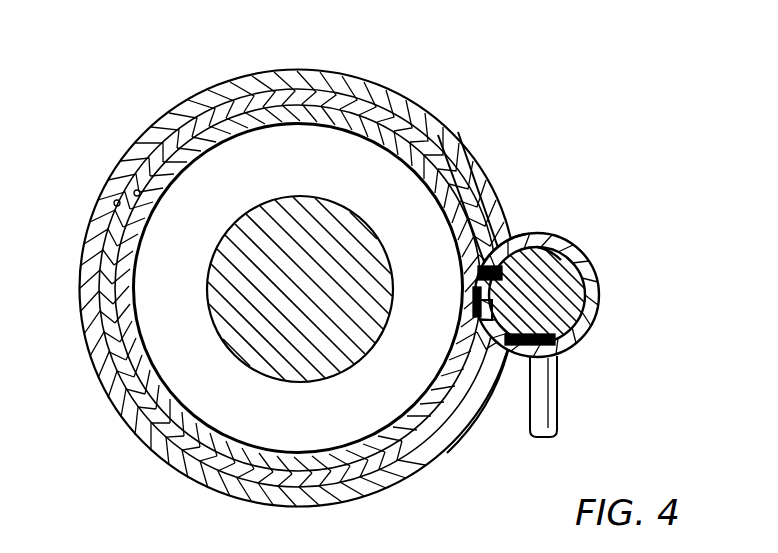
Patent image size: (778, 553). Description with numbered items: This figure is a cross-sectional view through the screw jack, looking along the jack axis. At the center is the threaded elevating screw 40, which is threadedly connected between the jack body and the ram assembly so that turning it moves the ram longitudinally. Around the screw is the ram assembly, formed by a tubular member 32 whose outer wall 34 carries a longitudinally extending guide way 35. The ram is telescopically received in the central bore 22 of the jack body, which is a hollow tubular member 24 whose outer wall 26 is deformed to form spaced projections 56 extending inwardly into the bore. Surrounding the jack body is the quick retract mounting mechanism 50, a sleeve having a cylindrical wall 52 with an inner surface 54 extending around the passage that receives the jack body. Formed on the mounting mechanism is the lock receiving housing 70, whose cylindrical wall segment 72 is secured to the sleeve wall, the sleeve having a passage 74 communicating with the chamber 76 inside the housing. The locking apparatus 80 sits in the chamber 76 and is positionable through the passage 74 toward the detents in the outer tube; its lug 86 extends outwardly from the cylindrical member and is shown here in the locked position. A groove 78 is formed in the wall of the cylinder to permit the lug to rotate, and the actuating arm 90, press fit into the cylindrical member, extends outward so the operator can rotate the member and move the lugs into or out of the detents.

The quick retract mounting mechanism 50 is at (314, 68).
The cylindrical wall 52 is at (123, 172).
The inner surface 54 is at (115, 222).
The tubular member 32 is at (176, 142).
The outer wall 34 is at (158, 192).
The threaded elevating screw 40 is at (318, 205).
The central bore 22 is at (490, 174).
The tubular member 24 is at (500, 193).
The lock receiving housing 70 is at (610, 273).
The passage 74 is at (512, 228).
The cylindrical wall segment 72 is at (602, 293).
The locking apparatus 80 is at (603, 273).
The lug 86 is at (563, 266).
The projections 56 is at (478, 270).
The guide way 35 is at (455, 237).
The chamber 76 is at (572, 317).
The actuating arm 90 is at (558, 401).
The groove 78 is at (556, 362).
The outer wall 26 is at (470, 435).